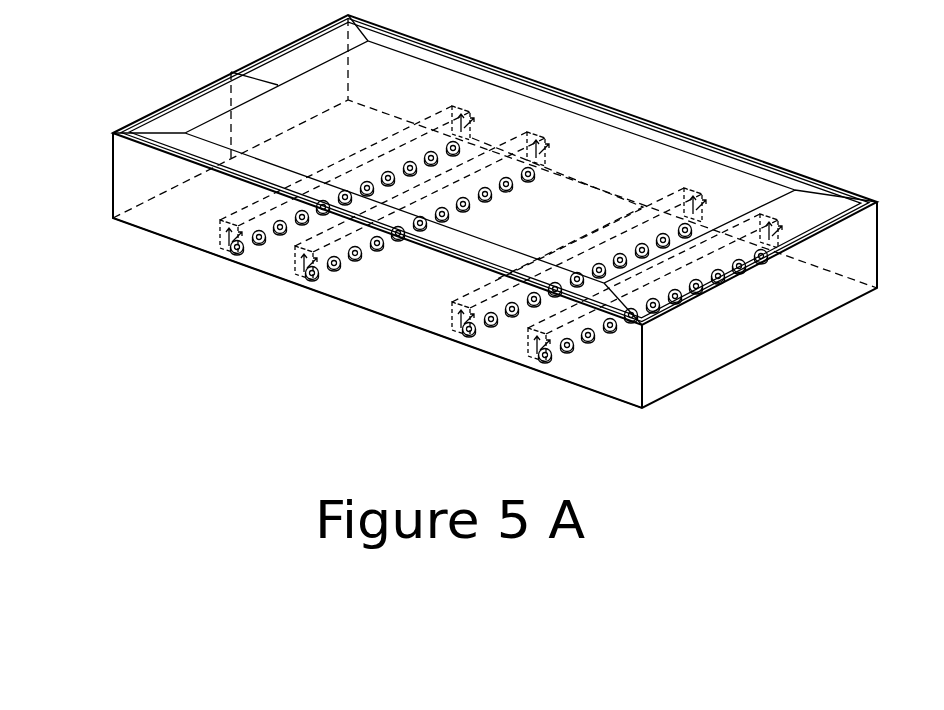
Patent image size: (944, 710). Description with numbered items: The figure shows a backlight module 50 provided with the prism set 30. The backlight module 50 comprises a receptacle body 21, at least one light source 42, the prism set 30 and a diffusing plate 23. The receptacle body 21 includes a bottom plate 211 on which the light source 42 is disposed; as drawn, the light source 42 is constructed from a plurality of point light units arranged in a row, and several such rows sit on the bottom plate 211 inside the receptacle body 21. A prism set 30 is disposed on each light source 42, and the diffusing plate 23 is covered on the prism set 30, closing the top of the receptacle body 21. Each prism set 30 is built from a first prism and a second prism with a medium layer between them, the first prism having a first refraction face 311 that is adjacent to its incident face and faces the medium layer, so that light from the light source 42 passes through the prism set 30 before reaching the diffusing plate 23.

The backlight module 50 is at (755, 70).
The receptacle body 21 is at (112, 178).
The bottom plate 211 is at (183, 228).
The diffusing plate 23 is at (192, 107).
The prism set 30 is at (440, 115).
The first refraction face 311 is at (453, 312).
The light source 42 is at (300, 284).